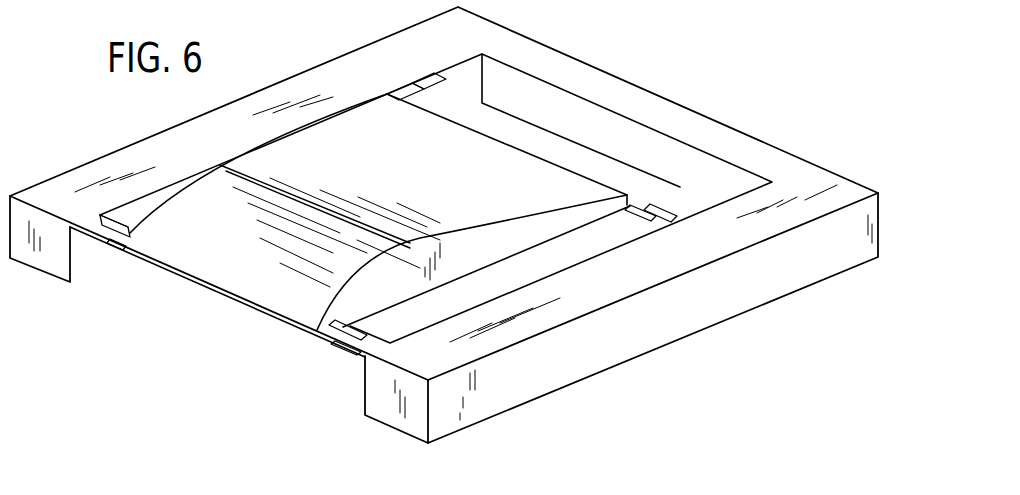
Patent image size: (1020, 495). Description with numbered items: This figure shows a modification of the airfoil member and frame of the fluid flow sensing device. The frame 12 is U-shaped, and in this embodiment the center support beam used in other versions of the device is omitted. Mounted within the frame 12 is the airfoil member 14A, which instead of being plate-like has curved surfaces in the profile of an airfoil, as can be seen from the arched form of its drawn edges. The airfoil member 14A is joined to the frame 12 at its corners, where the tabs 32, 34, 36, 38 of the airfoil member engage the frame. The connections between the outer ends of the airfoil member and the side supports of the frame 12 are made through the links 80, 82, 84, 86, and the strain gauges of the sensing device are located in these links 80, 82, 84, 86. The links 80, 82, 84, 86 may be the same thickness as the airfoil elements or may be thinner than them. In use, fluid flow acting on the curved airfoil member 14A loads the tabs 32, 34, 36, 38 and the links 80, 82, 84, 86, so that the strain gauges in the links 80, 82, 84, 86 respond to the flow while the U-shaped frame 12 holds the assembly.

The frame 12 is at (583, 386).
The airfoil member 14A is at (256, 286).
The tab 32 is at (130, 217).
The tab 34 is at (372, 328).
The tab 36 is at (408, 92).
The tab 38 is at (663, 206).
The link 80 is at (124, 248).
The link 82 is at (340, 350).
The link 84 is at (430, 90).
The link 86 is at (674, 200).